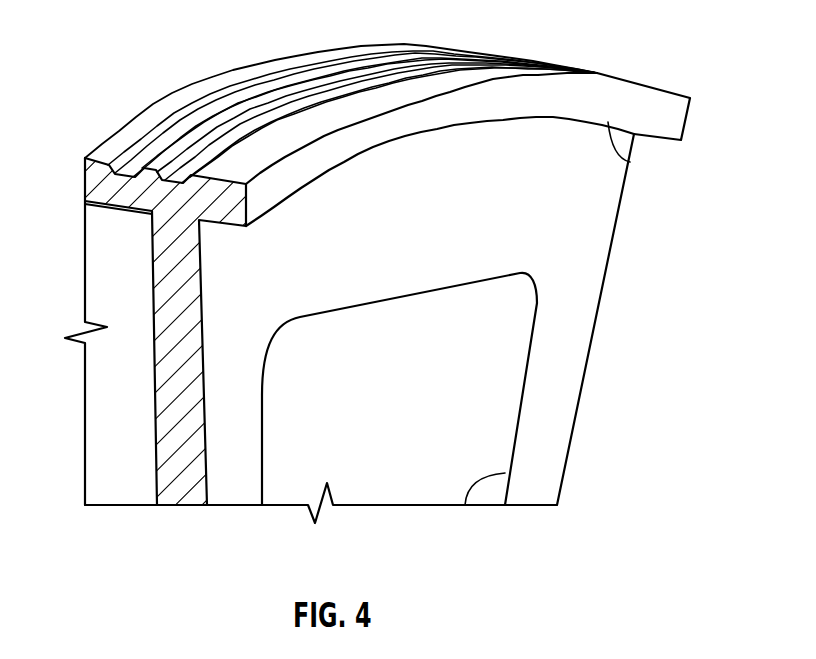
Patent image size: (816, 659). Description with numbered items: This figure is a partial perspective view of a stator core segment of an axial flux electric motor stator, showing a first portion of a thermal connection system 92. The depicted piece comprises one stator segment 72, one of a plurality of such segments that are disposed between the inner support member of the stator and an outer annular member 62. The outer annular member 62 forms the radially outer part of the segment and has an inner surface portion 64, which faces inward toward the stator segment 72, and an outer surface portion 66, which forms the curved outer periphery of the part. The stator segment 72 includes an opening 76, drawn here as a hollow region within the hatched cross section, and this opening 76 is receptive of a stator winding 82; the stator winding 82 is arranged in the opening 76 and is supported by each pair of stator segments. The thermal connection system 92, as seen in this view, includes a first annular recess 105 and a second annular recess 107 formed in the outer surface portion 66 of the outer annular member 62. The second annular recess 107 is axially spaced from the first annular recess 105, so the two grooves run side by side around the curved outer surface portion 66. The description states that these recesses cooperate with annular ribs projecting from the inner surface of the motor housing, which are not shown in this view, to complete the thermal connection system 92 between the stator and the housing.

The thermal connection system 92 is at (115, 47).
The outer surface portion 66 is at (108, 152).
The first annular recess 105 is at (192, 118).
The second annular recess 107 is at (285, 108).
The outer annular member 62 is at (674, 116).
The inner surface portion 64 is at (630, 162).
The stator segment 72 is at (598, 437).
The stator winding 82 is at (533, 288).
The opening 76 is at (465, 505).